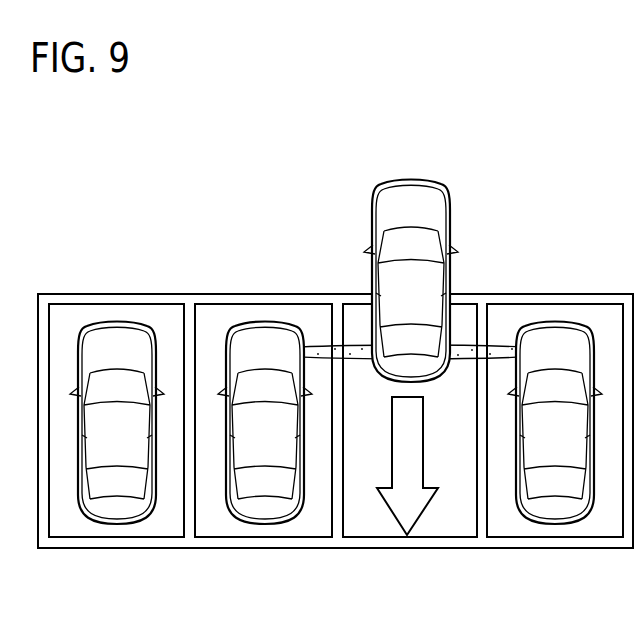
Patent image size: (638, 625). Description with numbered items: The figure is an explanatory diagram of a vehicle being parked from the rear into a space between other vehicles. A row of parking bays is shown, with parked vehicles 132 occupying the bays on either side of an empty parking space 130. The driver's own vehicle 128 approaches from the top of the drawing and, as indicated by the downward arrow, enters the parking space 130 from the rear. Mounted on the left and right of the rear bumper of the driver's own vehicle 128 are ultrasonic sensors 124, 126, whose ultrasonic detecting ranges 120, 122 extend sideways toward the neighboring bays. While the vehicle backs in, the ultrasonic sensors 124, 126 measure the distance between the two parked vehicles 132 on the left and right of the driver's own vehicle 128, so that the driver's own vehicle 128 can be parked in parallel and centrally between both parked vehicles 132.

The ultrasonic detecting range 120 is at (312, 343).
The ultrasonic detecting range 122 is at (507, 350).
The ultrasonic sensor 124 is at (357, 348).
The ultrasonic sensor 126 is at (462, 350).
The driver's own vehicle 128 is at (415, 195).
The parking space 130 is at (456, 515).
The parked vehicle 132 is at (122, 513).